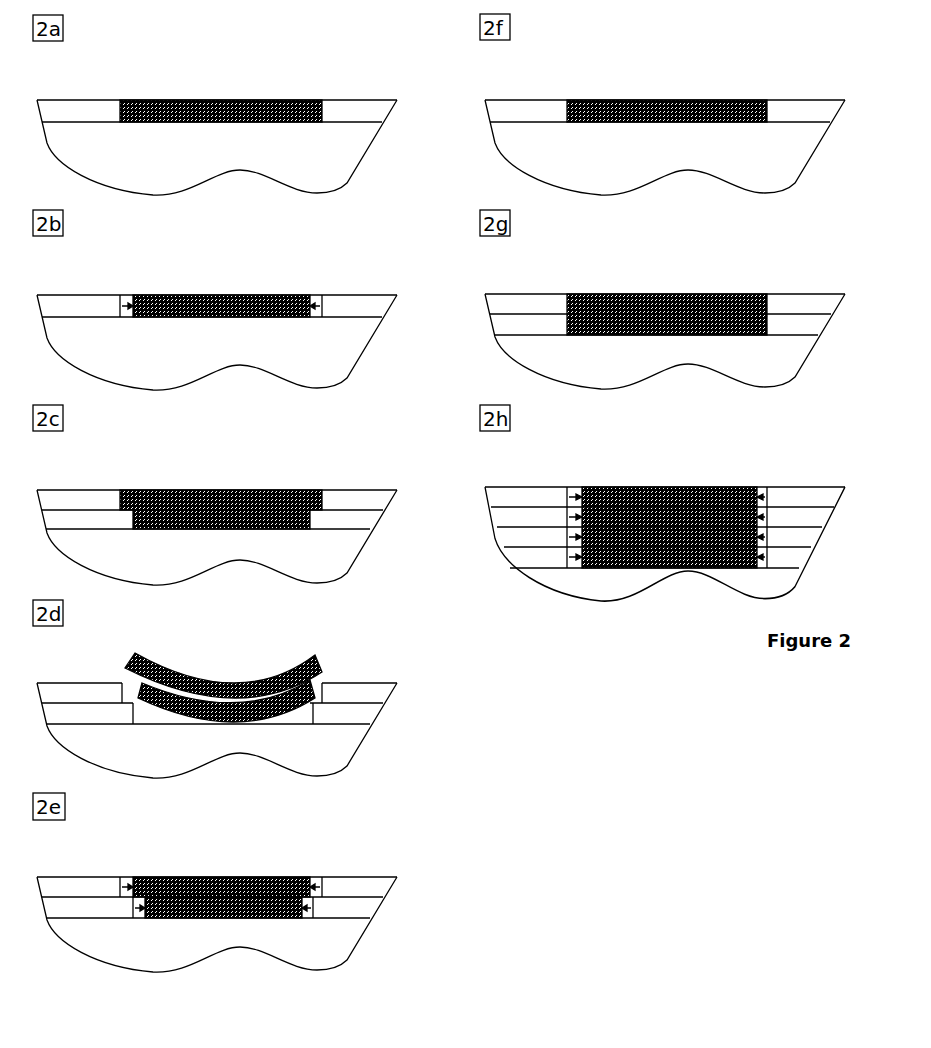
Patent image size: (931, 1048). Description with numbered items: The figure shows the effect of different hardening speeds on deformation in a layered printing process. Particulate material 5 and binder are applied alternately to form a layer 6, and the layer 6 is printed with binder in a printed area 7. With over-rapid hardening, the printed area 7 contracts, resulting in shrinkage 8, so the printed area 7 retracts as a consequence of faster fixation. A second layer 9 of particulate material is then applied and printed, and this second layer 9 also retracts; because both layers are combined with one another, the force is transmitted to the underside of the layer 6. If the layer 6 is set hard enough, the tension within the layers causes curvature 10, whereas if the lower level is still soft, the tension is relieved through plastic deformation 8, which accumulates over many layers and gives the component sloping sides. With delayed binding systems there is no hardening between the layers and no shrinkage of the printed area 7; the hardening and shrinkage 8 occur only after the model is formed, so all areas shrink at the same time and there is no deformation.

The particulate material 5 is at (303, 173).
The layer 6 is at (98, 113).
The printed area 7 is at (202, 113).
The shrinkage 8 is at (320, 305).
The second layer 9 is at (98, 503).
The curvature 10 is at (322, 670).